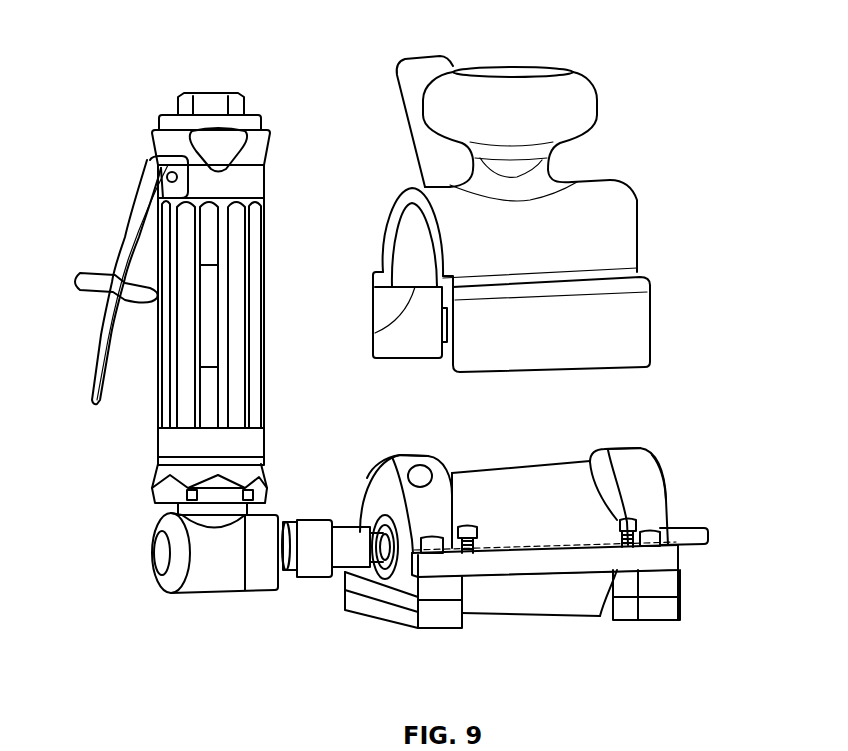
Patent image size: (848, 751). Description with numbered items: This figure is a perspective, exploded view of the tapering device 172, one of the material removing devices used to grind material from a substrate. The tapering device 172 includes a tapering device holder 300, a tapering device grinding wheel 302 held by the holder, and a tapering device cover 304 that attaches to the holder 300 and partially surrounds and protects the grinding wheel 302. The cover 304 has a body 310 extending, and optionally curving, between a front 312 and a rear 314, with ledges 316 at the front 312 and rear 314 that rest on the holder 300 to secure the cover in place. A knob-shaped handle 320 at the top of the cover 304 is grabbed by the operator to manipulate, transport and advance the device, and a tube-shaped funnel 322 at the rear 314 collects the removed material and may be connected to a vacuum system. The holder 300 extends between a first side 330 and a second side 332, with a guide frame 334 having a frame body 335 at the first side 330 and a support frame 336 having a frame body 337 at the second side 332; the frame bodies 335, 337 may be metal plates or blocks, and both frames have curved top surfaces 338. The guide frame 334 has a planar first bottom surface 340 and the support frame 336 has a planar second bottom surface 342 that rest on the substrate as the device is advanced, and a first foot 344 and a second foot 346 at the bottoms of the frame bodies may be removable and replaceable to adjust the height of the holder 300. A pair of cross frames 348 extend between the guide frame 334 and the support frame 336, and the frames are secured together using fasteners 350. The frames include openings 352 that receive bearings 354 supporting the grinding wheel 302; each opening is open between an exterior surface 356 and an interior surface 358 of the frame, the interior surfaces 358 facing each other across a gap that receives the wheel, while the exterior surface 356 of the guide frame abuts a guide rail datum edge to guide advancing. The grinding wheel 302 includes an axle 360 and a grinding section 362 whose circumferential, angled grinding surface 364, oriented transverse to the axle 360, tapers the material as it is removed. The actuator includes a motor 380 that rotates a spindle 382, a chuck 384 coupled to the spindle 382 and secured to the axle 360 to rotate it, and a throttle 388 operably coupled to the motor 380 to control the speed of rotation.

The tapering device 172 is at (168, 42).
The tapering device holder 300 is at (666, 432).
The tapering device grinding wheel 302 is at (496, 485).
The tapering device cover 304 is at (620, 257).
The body 310 is at (602, 208).
The front 312 is at (508, 357).
The rear 314 is at (372, 320).
The ledges 316 is at (377, 330).
The handle 320 is at (585, 106).
The funnel 322 is at (413, 93).
The first side 330 is at (350, 446).
The second side 332 is at (684, 460).
The guide frame 334 is at (399, 456).
The frame body 335 is at (383, 473).
The support frame 336 is at (625, 455).
The frame body 337 is at (650, 505).
The curved top surfaces 338 is at (421, 456).
The first bottom surface 340 is at (386, 605).
The second bottom surface 342 is at (621, 618).
The first foot 344 is at (436, 620).
The second foot 346 is at (668, 608).
The cross frames 348 is at (550, 563).
The fasteners 350 is at (660, 535).
The openings 352 is at (380, 578).
The bearings 354 is at (365, 588).
The exterior surface 356 is at (382, 620).
The interior surface 358 is at (463, 620).
The axle 360 is at (700, 537).
The grinding section 362 is at (576, 495).
The grinding surface 364 is at (584, 617).
The motor 380 is at (165, 408).
The spindle 382 is at (178, 558).
The chuck 384 is at (318, 526).
The throttle 388 is at (105, 350).